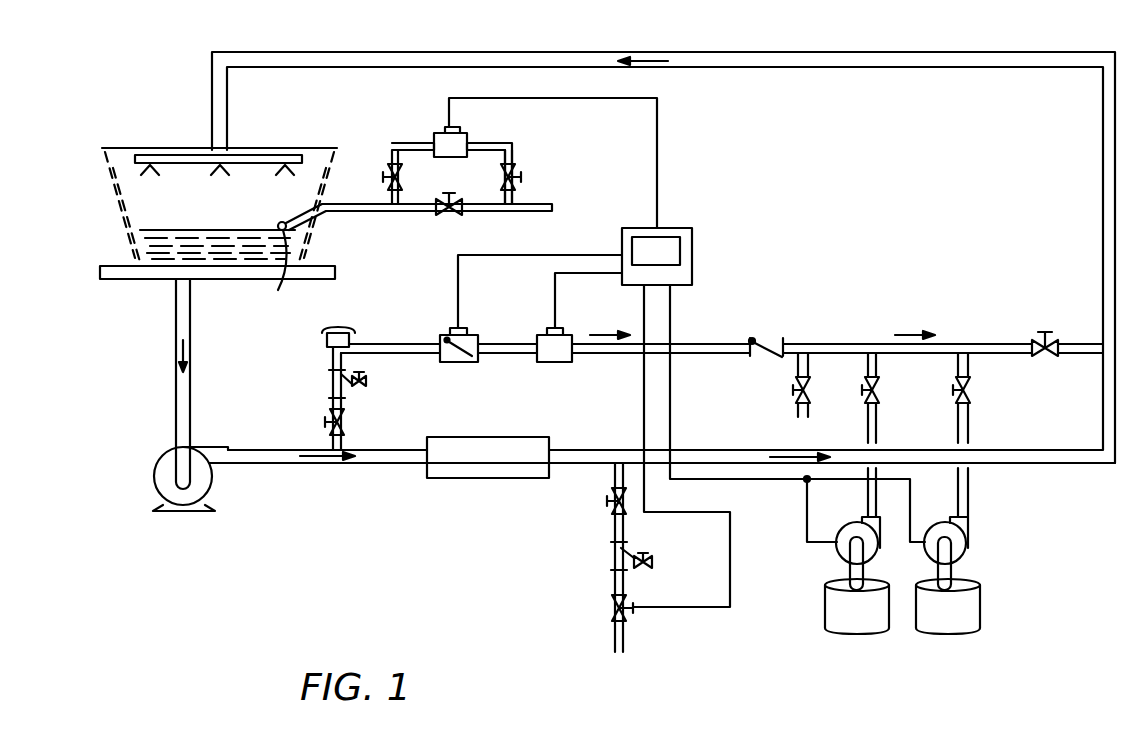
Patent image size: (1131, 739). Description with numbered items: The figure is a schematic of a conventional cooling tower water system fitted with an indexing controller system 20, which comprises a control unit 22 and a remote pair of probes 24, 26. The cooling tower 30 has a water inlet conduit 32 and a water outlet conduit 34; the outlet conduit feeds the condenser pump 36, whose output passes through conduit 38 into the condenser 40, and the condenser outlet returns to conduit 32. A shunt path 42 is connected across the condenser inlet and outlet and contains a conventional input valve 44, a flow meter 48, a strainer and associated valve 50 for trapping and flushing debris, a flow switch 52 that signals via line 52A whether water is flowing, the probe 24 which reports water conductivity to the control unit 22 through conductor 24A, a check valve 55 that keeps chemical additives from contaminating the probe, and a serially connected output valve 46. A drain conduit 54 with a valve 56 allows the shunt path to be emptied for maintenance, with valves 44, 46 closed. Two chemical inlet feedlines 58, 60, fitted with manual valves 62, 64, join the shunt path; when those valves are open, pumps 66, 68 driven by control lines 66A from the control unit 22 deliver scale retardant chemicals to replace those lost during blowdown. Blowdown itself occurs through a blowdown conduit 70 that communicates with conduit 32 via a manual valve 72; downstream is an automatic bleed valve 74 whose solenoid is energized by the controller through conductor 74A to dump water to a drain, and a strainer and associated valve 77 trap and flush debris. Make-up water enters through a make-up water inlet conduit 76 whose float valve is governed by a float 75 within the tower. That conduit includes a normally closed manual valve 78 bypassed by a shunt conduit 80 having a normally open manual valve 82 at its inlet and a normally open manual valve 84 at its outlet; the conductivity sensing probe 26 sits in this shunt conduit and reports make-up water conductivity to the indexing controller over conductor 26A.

The indexing controller system 20 is at (679, 218).
The control unit 22 is at (675, 278).
The probe 24 is at (574, 326).
The conductor 24A is at (555, 278).
The probe 26 is at (437, 126).
The conductor 26A is at (658, 152).
The cooling tower 30 is at (143, 207).
The water inlet conduit 32 is at (332, 52).
The water outlet conduit 34 is at (168, 389).
The condenser pump 36 is at (158, 481).
The conduit 38 is at (272, 464).
The condenser 40 is at (476, 490).
The shunt path 42 is at (820, 340).
The input valve 44 is at (345, 424).
The output valve 46 is at (1052, 340).
The flow meter 48 is at (320, 339).
The strainer and associated valve 50 is at (362, 384).
The flow switch 52 is at (470, 334).
The line 52A is at (496, 252).
The drain conduit 54 is at (808, 369).
The check valve 55 is at (772, 338).
The valve 56 is at (808, 396).
The chemical inlet feedline 58 is at (877, 369).
The chemical inlet feedline 60 is at (969, 371).
The manual valve 62 is at (878, 396).
The manual valve 64 is at (970, 396).
The pump 66 is at (840, 556).
The control lines 66A is at (672, 440).
The pump 68 is at (962, 556).
The blowdown conduit 70 is at (608, 485).
The manual valve 72 is at (612, 508).
The automatic bleed valve 74 is at (608, 612).
The conductor 74A is at (643, 406).
The float 75 is at (263, 266).
The make-up water inlet conduit 76 is at (332, 218).
The strainer and associated valve 77 is at (655, 568).
The manual valve 78 is at (456, 212).
The shunt conduit 80 is at (510, 150).
The manual valve 82 is at (502, 177).
The manual valve 84 is at (400, 177).